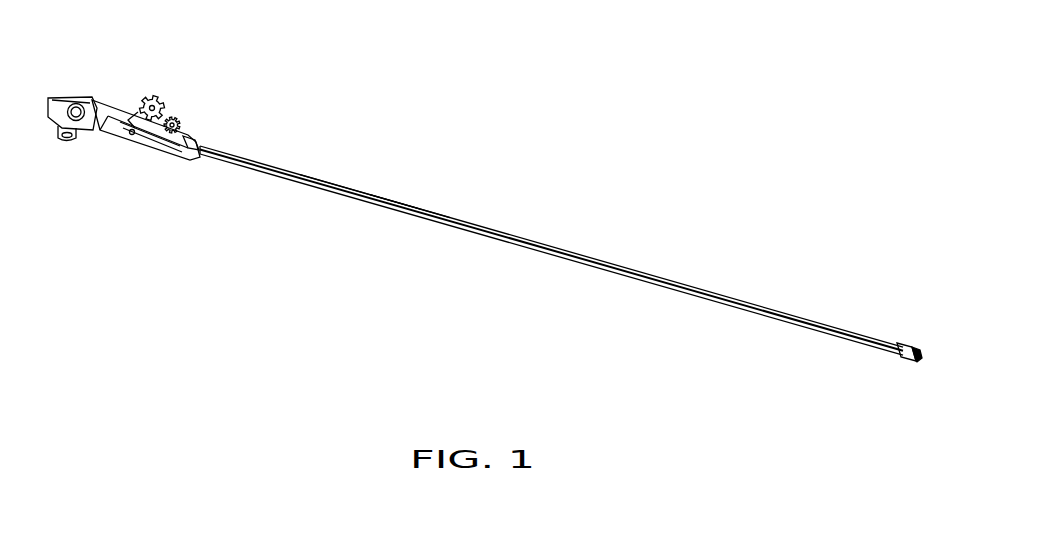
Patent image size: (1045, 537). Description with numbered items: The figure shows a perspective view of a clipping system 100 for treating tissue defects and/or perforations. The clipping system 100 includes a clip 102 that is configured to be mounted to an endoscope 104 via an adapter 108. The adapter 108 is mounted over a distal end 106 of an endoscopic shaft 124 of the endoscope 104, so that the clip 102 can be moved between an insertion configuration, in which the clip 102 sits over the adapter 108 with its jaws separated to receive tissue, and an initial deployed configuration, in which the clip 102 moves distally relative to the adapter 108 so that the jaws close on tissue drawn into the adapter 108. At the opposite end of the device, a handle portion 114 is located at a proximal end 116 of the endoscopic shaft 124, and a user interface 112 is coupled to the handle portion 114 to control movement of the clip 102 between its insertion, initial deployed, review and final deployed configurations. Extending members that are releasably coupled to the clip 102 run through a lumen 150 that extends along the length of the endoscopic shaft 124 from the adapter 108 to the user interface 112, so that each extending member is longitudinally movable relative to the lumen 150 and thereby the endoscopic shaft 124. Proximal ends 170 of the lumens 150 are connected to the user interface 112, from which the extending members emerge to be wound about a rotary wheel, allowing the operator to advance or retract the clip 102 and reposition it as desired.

The clipping system 100 is at (512, 118).
The clip 102 is at (917, 340).
The endoscope 104 is at (610, 227).
The distal end 106 is at (889, 342).
The adapter 108 is at (900, 353).
The user interface 112 is at (208, 95).
The handle portion 114 is at (150, 140).
The proximal end 116 is at (205, 157).
The endoscopic shaft 124 is at (353, 187).
The lumen 150 is at (386, 198).
The proximal ends of the lumens 170 is at (192, 134).